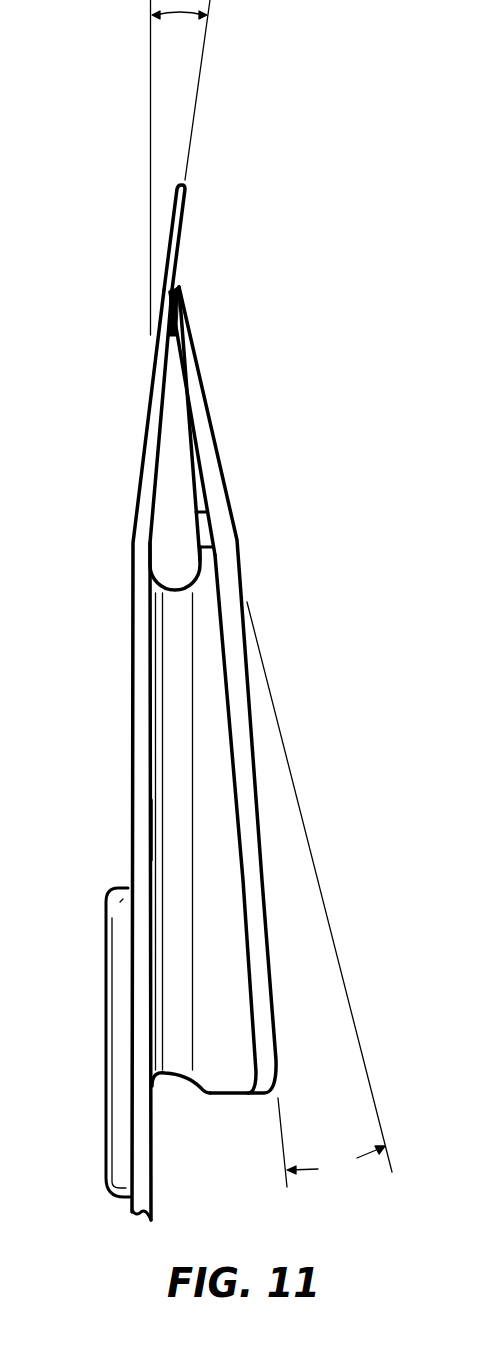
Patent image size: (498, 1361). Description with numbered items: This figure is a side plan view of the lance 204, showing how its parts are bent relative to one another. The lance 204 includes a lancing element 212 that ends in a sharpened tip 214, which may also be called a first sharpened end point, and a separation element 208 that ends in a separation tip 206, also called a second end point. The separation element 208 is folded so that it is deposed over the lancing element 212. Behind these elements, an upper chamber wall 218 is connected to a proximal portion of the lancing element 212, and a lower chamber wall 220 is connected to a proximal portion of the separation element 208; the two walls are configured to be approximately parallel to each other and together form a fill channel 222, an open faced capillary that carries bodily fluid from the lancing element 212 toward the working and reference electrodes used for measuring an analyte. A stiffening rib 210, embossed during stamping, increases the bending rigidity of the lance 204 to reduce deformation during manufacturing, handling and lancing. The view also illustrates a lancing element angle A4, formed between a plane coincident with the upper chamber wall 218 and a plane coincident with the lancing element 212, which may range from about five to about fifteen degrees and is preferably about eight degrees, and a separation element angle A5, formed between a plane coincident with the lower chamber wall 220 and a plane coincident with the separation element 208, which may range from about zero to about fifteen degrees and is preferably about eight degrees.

The lance 204 is at (129, 243).
The separation tip 206 is at (180, 290).
The separation element 208 is at (220, 521).
The stiffening rib 210 is at (108, 907).
The lancing element 212 is at (142, 493).
The sharpened tip 214 is at (188, 191).
The upper chamber wall 218 is at (150, 842).
The lower chamber wall 220 is at (229, 730).
The fill channel 222 is at (183, 657).
The lancing element angle A4 is at (181, 12).
The separation element angle A5 is at (319, 894).